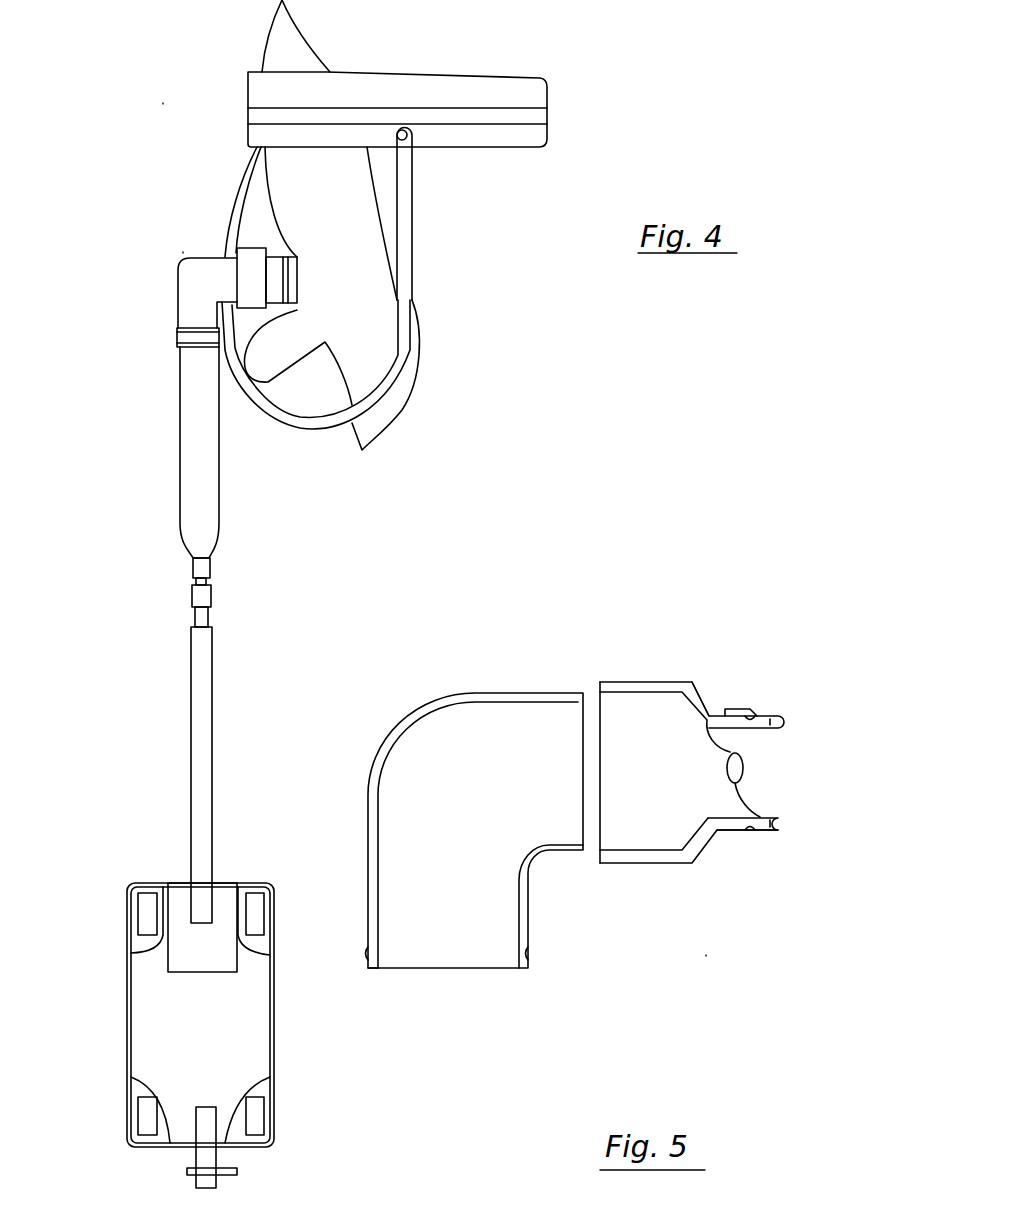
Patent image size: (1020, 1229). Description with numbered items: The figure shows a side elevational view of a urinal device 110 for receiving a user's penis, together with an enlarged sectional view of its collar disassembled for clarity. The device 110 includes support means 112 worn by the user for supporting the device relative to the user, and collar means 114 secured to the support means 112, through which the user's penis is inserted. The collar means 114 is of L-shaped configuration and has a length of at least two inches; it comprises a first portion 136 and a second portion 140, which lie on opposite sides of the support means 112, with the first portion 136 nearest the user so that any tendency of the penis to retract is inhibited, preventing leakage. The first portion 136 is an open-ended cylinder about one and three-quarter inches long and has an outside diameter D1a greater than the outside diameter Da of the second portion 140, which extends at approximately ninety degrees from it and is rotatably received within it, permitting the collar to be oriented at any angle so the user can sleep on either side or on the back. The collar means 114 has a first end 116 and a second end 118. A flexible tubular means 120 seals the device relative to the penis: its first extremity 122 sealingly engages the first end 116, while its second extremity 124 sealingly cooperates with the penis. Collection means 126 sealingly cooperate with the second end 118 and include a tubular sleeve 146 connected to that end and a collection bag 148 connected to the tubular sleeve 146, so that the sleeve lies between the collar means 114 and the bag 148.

In FIG. 4, the urinal device 110 is at (163, 103).
In FIG. 4, the support means 112 is at (245, 180).
In FIG. 4, the collar means 114 is at (183, 252).
In FIG. 5, the collar means 114 is at (706, 955).
In FIG. 4, the first end 116 is at (297, 255).
In FIG. 5, the first end 116 is at (783, 823).
In FIG. 4, the second end 118 is at (178, 335).
In FIG. 5, the second end 118 is at (372, 970).
In FIG. 5, the flexible tubular means 120 is at (722, 818).
In FIG. 5, the first extremity 122 is at (747, 715).
In FIG. 5, the second extremity 124 is at (707, 716).
In FIG. 4, the collection means 126 is at (230, 480).
In FIG. 4, the first portion 136 is at (253, 255).
In FIG. 5, the first portion 136 is at (605, 867).
In FIG. 4, the second portion 140 is at (192, 290).
In FIG. 5, the second portion 140 is at (392, 733).
In FIG. 4, the tubular sleeve 146 is at (203, 748).
In FIG. 4, the collection bag 148 is at (243, 1057).